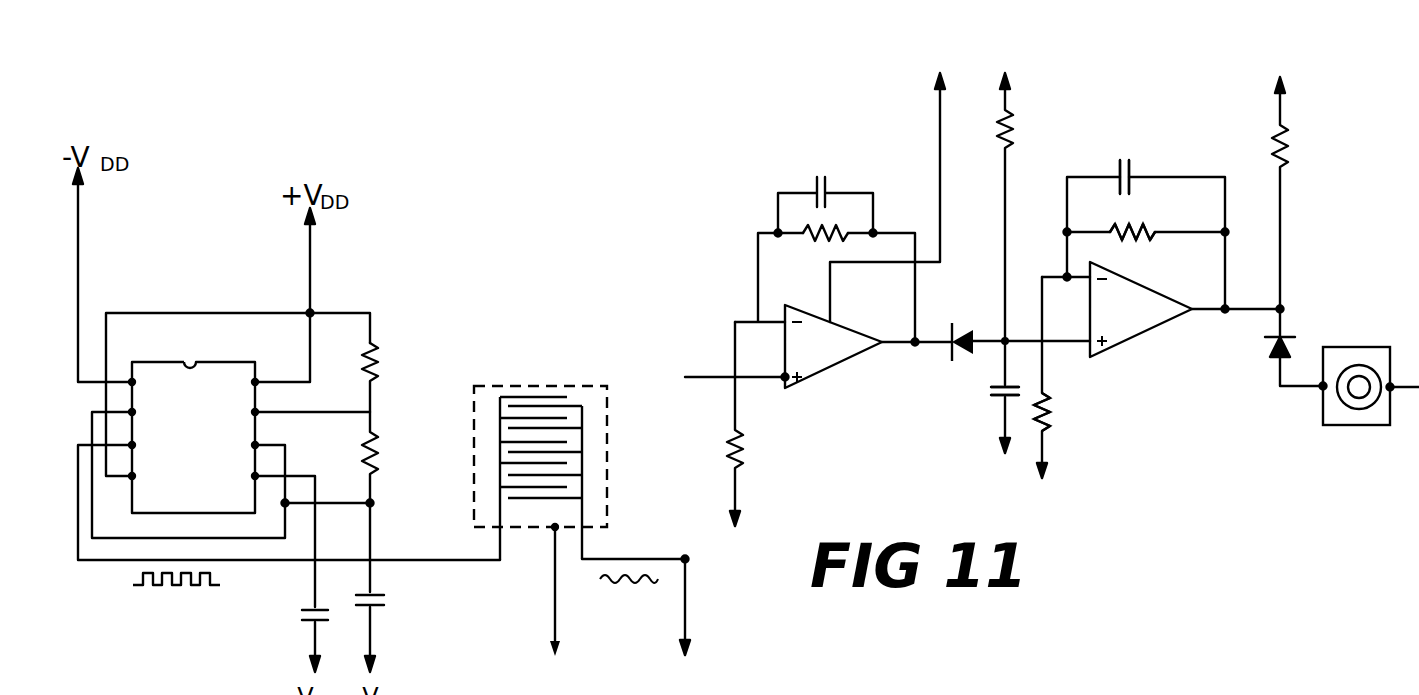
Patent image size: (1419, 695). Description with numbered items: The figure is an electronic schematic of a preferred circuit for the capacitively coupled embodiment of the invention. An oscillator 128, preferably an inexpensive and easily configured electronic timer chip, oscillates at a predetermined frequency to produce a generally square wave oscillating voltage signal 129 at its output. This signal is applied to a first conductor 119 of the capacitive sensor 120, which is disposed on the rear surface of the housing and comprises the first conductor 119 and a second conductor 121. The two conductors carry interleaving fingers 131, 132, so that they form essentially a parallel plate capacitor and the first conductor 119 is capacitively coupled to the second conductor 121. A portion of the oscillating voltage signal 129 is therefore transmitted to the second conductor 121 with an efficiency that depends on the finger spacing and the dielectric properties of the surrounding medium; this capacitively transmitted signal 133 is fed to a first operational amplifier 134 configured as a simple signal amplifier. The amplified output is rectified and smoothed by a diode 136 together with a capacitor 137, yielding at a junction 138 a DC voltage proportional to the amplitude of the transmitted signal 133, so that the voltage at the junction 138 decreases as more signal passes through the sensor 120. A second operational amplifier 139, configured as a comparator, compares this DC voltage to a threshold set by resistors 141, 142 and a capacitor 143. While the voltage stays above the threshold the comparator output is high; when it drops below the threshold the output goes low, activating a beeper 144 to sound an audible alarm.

The first conductor 119 is at (500, 423).
The capacitive sensor 120 is at (549, 484).
The second conductor 121 is at (583, 445).
The oscillator 128 is at (194, 226).
The oscillating voltage signal 129 is at (199, 594).
The interleaving fingers 131 is at (522, 396).
The interleaving fingers 132 is at (556, 405).
The capacitively transmitted signal 133 is at (635, 588).
The first operational amplifier 134 is at (838, 358).
The diode 136 is at (966, 357).
The capacitor 137 is at (995, 402).
The junction 138 is at (1003, 336).
The second operational amplifier 139 is at (1152, 318).
The resistor 141 is at (1052, 406).
The resistor 142 is at (1148, 228).
The capacitor 143 is at (1129, 170).
The beeper 144 is at (1342, 415).